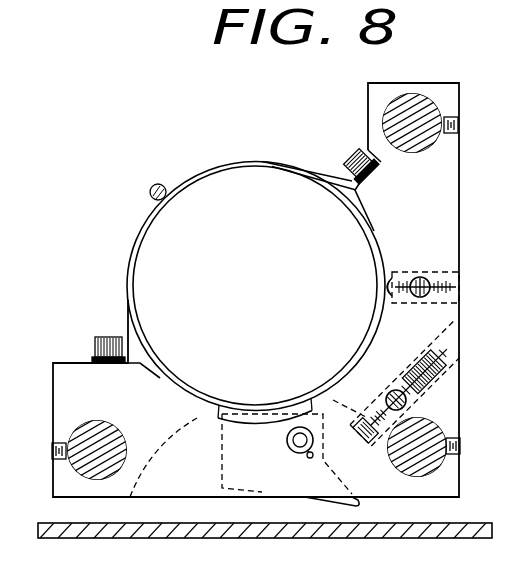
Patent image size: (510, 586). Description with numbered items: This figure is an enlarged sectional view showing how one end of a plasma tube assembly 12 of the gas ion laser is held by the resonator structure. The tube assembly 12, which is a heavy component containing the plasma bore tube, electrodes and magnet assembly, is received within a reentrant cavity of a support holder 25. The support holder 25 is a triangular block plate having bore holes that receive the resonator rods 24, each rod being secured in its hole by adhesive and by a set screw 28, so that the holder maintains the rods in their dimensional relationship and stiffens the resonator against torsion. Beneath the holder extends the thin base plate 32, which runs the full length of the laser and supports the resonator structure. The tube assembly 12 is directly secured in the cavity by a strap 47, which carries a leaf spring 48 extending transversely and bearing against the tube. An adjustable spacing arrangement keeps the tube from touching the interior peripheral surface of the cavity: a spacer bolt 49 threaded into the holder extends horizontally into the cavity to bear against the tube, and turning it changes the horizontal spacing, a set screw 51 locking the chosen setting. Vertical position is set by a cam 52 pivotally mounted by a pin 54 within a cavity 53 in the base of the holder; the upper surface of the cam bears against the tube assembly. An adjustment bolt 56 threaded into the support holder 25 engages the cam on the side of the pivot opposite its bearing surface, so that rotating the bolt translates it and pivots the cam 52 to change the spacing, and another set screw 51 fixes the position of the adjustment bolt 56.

The plasma tube assembly 12 is at (250, 178).
The rods 24 is at (413, 100).
The support holder 25 is at (458, 224).
The set screw 28 is at (462, 126).
The base plate 32 is at (270, 537).
The strap 47 is at (303, 170).
The leaf spring 48 is at (197, 157).
The spacer bolt 49 is at (395, 273).
The set screw 51 is at (458, 294).
The cam 52 is at (290, 430).
The cavity 53 is at (177, 433).
The pin 54 is at (263, 421).
The adjustment bolt 56 is at (412, 377).